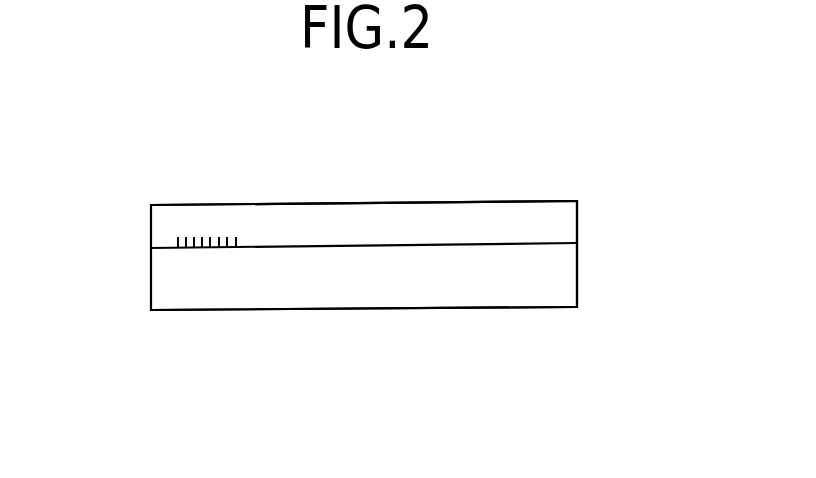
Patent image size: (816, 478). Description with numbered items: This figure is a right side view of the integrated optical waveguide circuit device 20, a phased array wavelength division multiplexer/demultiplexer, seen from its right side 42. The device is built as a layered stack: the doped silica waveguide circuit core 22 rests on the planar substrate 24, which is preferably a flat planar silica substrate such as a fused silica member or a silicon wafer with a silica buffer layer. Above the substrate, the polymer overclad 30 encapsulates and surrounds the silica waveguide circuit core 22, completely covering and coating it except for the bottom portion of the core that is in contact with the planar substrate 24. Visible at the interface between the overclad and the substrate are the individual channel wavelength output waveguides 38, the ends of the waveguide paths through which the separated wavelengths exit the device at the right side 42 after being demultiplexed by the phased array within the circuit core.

The integrated optical waveguide circuit device 20 is at (146, 146).
The doped silica waveguide circuit core 22 is at (208, 272).
The planar substrate 24 is at (370, 291).
The polymer overclad 30 is at (402, 236).
The output waveguides 38 is at (227, 212).
The right side 42 is at (600, 243).